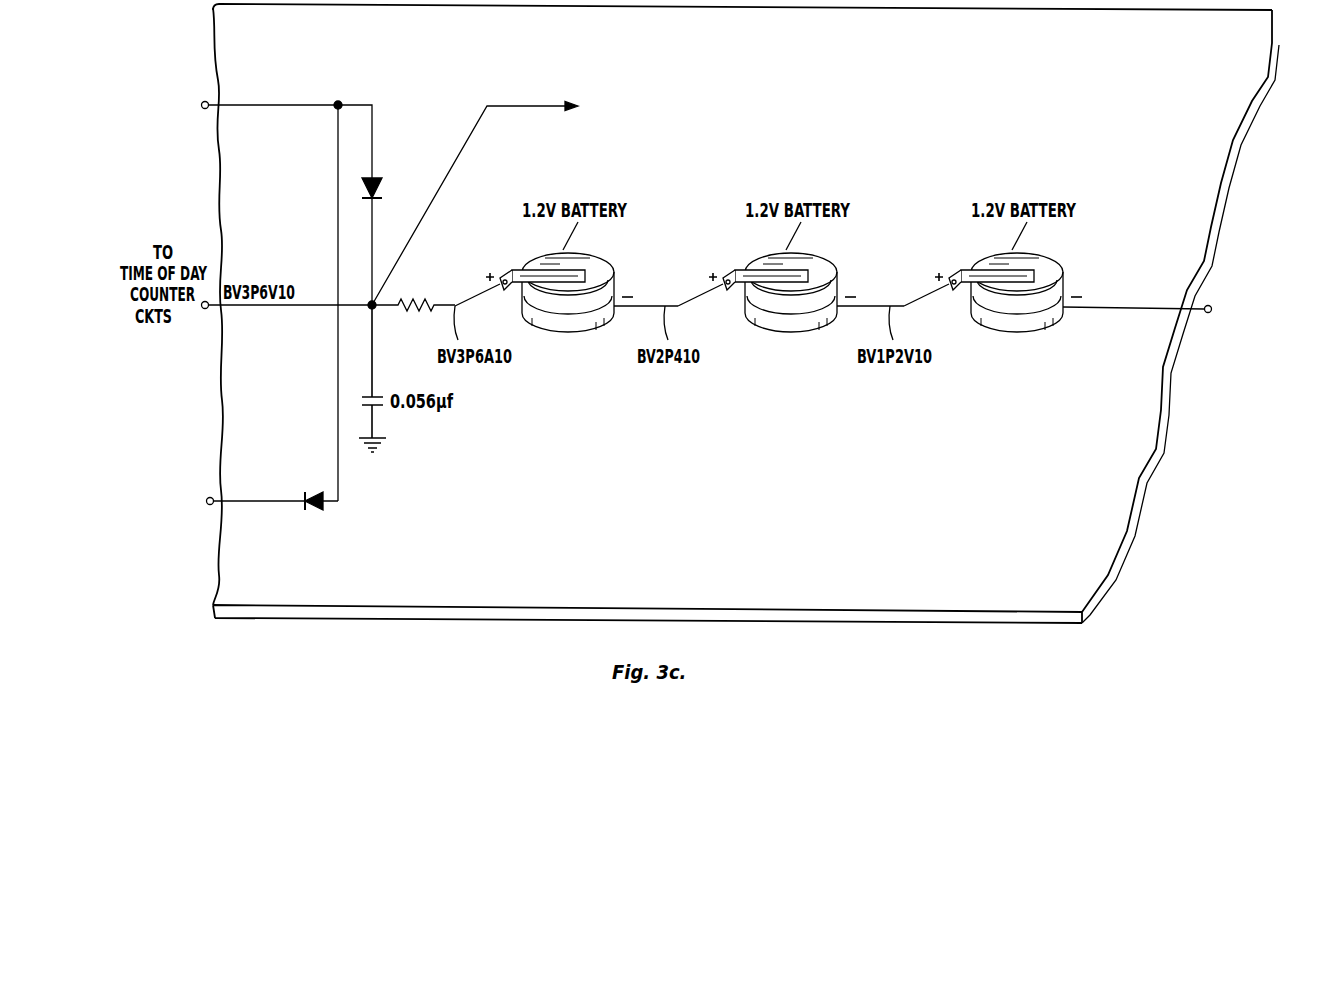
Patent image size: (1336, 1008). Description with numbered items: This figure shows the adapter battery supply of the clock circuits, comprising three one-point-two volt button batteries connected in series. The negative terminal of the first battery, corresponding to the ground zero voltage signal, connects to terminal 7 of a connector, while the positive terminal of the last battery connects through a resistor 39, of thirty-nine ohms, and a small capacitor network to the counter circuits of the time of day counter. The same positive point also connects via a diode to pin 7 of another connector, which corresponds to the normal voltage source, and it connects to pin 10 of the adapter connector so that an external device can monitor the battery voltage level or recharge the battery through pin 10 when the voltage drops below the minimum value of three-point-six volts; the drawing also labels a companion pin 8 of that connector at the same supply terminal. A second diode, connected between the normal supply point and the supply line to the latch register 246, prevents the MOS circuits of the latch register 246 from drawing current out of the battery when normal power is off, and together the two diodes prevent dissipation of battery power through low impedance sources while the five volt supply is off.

The pin 7 of connector 7 is at (1185, 318).
The pin 8 of connector Y01 8 is at (237, 282).
The pin 10 of connector Y01 10 is at (551, 194).
The 39 ohm resistor 39 is at (425, 292).
The latch register 246 is at (227, 500).